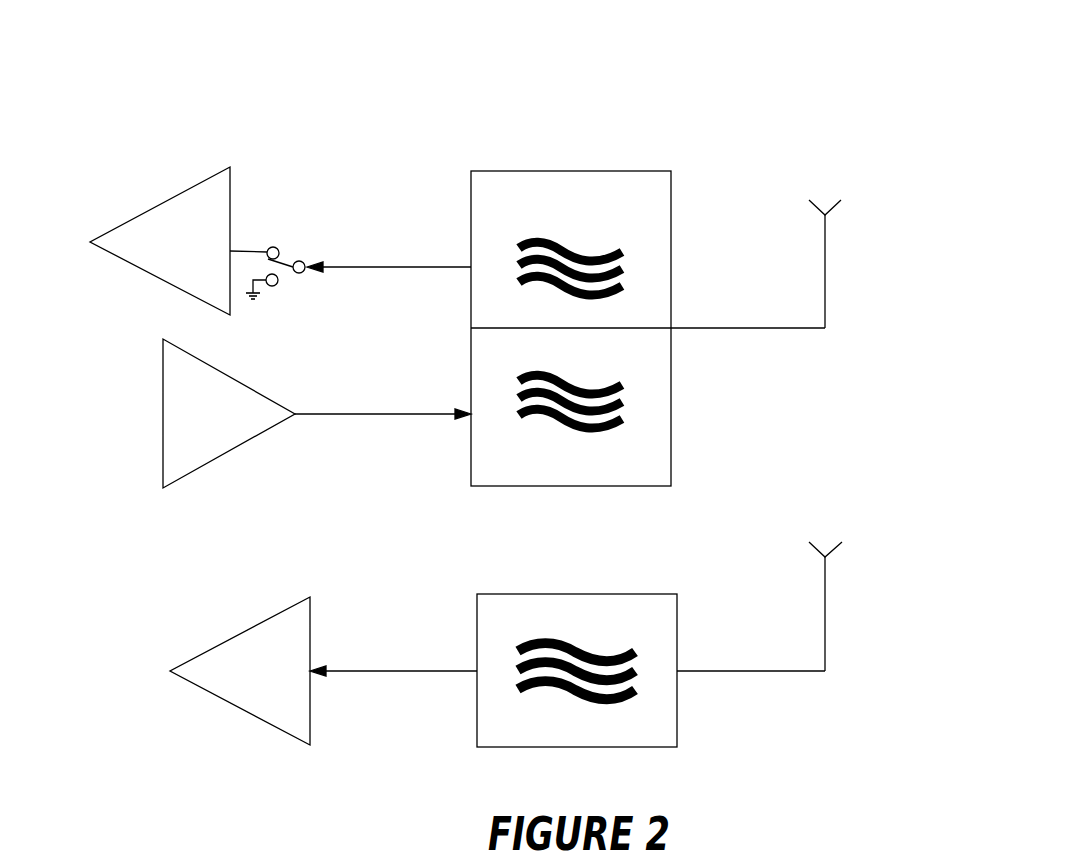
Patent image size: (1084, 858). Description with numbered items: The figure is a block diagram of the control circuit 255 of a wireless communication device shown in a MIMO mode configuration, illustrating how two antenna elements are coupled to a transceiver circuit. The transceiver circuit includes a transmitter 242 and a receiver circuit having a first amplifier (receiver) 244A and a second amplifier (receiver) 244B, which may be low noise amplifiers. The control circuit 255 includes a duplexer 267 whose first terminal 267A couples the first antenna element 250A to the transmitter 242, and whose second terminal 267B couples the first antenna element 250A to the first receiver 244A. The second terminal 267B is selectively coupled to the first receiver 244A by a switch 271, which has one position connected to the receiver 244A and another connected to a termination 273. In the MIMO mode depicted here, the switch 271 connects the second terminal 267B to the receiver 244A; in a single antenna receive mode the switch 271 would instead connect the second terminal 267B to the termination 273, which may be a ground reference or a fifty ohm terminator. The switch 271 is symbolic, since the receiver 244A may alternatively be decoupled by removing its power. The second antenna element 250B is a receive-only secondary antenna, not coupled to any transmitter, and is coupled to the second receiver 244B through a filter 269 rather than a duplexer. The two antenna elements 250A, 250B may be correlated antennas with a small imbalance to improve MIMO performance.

The control circuit 255 is at (640, 114).
The first amplifier (receiver) 244A is at (162, 210).
The second amplifier (receiver) 244B is at (238, 640).
The transmitter 242 is at (232, 455).
The switch 271 is at (295, 238).
The termination 273 is at (273, 305).
The duplexer 267 is at (568, 171).
The first terminal 267A is at (437, 413).
The second terminal 267B is at (453, 265).
The filter 269 is at (577, 594).
The first antenna element 250A is at (856, 171).
The second antenna element 250B is at (868, 503).